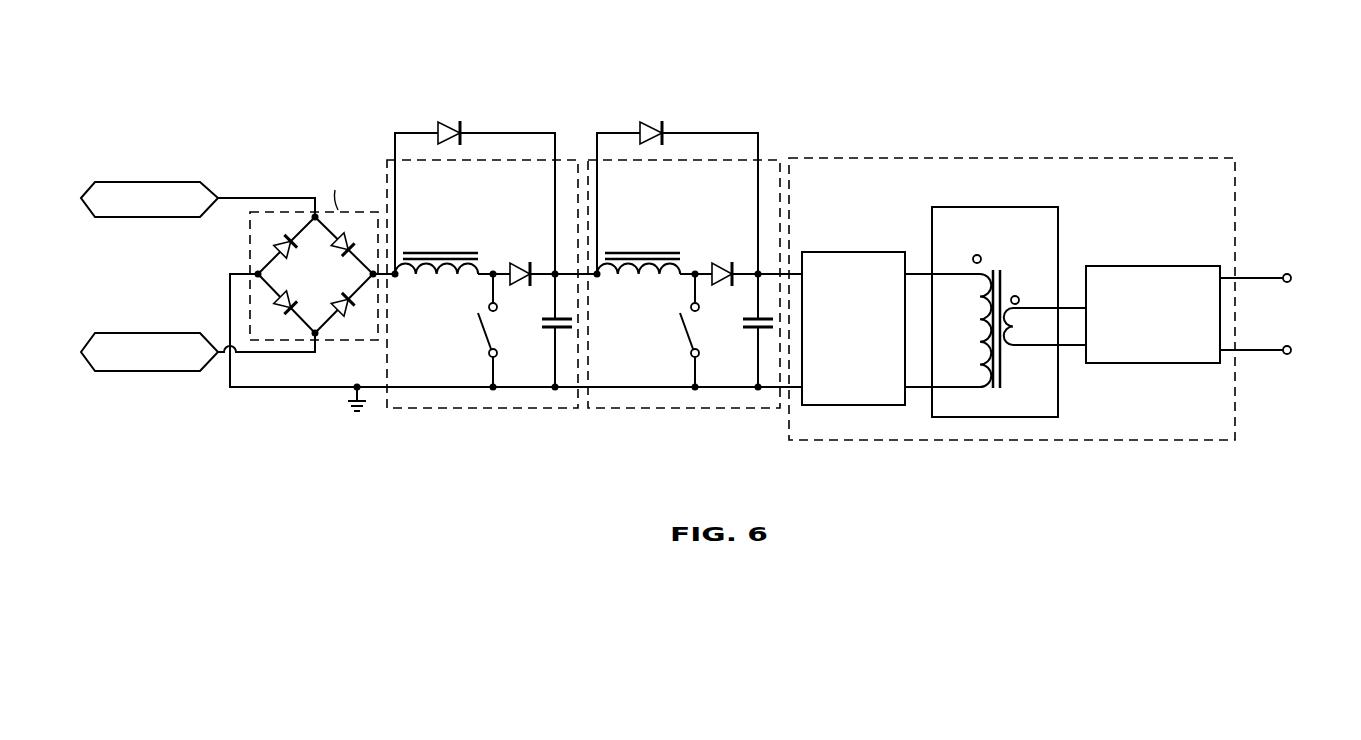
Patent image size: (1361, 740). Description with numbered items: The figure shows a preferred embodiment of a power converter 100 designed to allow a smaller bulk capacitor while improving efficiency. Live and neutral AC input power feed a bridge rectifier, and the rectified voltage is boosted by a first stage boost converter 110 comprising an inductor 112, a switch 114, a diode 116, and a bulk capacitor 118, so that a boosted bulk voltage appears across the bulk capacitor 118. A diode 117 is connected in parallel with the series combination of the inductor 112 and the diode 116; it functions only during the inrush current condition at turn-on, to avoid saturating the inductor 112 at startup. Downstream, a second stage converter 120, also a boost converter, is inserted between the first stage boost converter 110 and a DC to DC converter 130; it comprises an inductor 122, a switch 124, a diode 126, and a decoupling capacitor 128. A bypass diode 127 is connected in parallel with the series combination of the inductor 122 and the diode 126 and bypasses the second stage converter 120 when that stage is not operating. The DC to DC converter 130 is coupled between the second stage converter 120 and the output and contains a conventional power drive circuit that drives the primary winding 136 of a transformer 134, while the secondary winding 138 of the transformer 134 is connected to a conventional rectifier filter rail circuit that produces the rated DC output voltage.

The power converter 100 is at (1180, 51).
The first stage boost converter 110 is at (487, 410).
The inductor 112 is at (441, 250).
The switch 114 is at (486, 336).
The diode 116 is at (521, 261).
The diode 117 is at (447, 124).
The bulk capacitor 118 is at (546, 330).
The second stage converter 120 is at (689, 410).
The inductor 122 is at (641, 250).
The switch 124 is at (687, 336).
The diode 126 is at (722, 261).
The bypass diode 127 is at (648, 124).
The decoupling capacitor 128 is at (748, 330).
The DC to DC converter 130 is at (1237, 414).
The transformer 134 is at (980, 238).
The primary winding 136 is at (960, 387).
The secondary winding 138 is at (1033, 348).